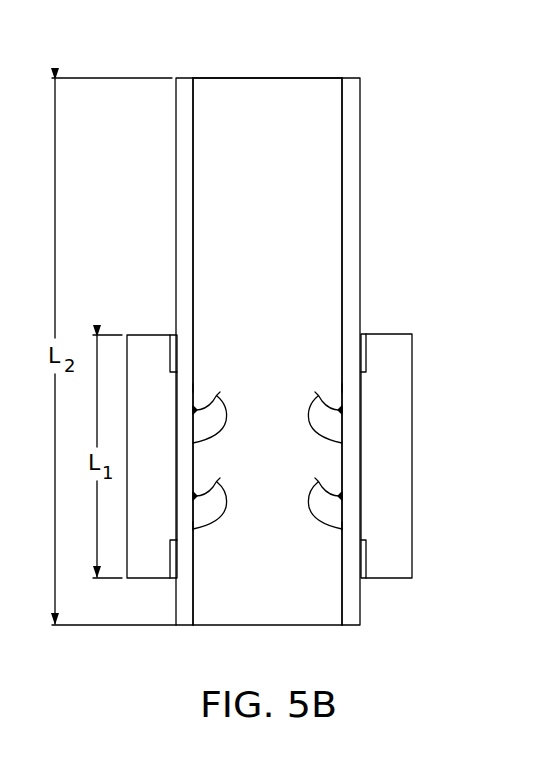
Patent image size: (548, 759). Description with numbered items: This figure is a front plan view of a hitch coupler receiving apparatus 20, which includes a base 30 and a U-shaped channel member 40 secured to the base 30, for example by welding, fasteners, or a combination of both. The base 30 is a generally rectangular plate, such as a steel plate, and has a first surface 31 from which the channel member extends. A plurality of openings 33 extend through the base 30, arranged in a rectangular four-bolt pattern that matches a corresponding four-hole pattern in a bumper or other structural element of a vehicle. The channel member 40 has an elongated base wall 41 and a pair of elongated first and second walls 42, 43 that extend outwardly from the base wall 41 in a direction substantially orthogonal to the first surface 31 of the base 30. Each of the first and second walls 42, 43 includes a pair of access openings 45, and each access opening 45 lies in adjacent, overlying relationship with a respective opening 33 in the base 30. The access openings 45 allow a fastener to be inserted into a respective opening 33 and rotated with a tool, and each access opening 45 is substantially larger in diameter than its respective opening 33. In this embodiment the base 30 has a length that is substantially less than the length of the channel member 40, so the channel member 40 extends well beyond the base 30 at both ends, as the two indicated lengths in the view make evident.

The hitch coupler receiving apparatus 20 is at (302, 332).
The base 30 is at (297, 417).
The first surface 31 is at (395, 450).
The openings 33 is at (219, 393).
The U-shaped channel member 40 is at (286, 334).
The base wall 41 is at (266, 106).
The first wall 42 is at (185, 240).
The second wall 43 is at (354, 238).
The access openings 45 is at (206, 391).